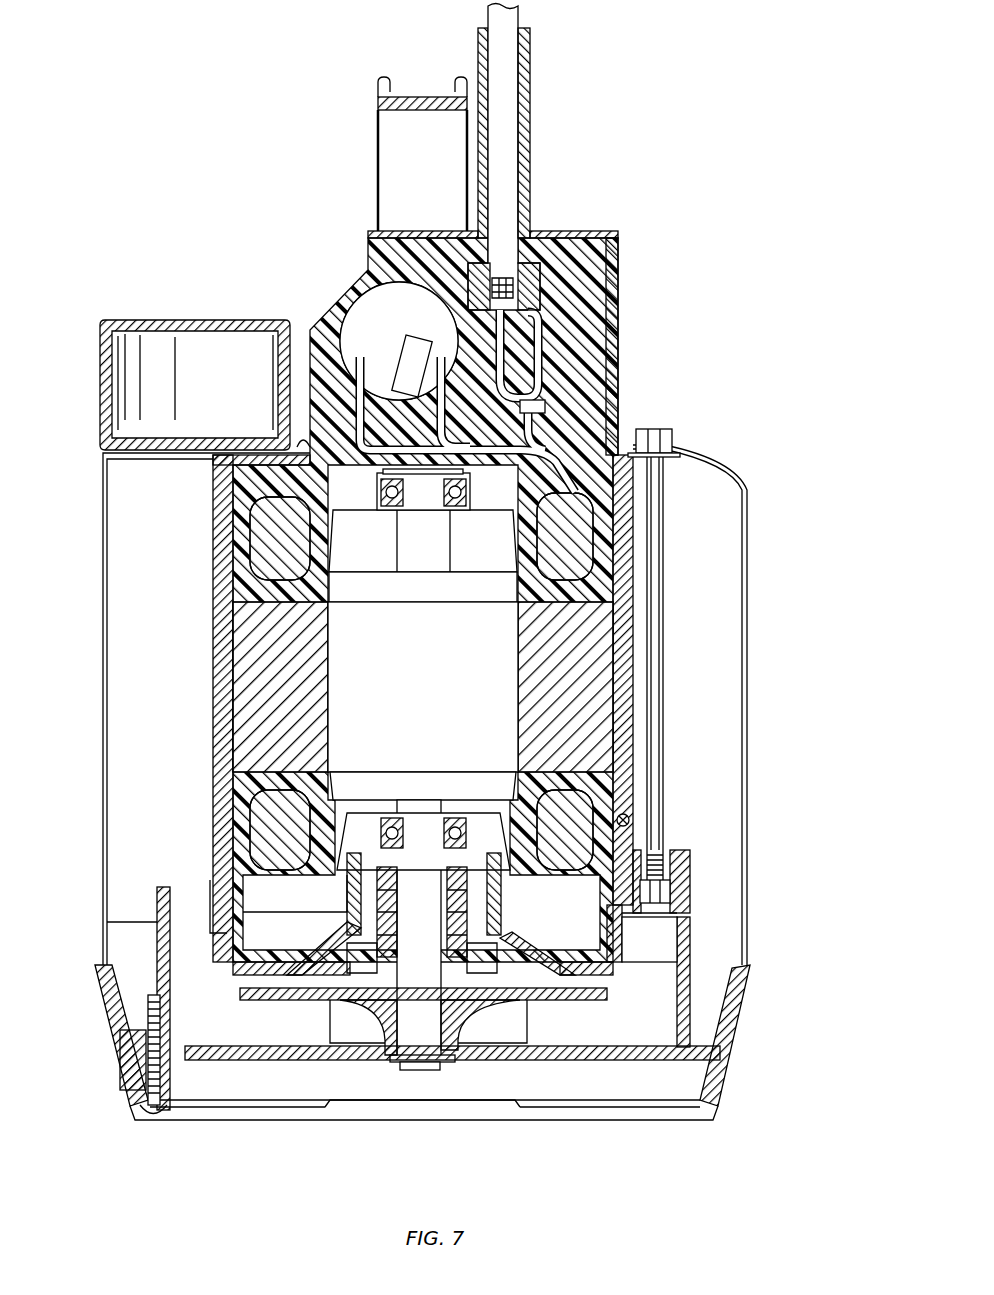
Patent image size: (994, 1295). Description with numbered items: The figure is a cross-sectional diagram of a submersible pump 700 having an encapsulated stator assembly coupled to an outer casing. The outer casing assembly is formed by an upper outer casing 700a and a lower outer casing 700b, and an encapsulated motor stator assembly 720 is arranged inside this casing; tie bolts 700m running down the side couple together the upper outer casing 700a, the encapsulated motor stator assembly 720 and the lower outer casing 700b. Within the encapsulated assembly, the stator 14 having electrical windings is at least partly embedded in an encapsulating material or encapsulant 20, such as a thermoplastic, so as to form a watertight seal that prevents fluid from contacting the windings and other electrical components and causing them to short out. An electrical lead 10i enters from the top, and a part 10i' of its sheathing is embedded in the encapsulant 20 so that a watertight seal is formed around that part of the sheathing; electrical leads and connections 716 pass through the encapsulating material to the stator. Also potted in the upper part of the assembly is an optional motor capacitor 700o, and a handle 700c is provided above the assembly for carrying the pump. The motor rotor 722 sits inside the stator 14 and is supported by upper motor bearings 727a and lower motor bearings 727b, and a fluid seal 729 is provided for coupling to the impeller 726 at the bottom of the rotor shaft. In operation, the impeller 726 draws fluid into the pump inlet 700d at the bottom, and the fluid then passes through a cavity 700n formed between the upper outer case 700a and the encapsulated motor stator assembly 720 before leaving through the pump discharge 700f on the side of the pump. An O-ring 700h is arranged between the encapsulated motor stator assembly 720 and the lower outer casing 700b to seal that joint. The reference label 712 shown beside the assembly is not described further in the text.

The submersible pump 700 is at (432, 602).
The handle 700c is at (412, 92).
The electrical lead 10i is at (563, 157).
The part of the sheathing of the electrical lead 10i' is at (547, 133).
The encapsulating material 20 is at (600, 232).
The encapsulated assembly 712 is at (632, 267).
The encapsulated motor stator assembly 720 is at (618, 308).
The electrical leads and connections 716 is at (547, 353).
The upper outer casing 700a is at (101, 548).
The pump discharge 700f is at (200, 308).
The optional motor capacitor 700o is at (375, 327).
The upper motor bearings 727a is at (387, 487).
The cavity 700n is at (148, 637).
The lower motor bearings 727b is at (372, 830).
The motor rotor 722 is at (400, 737).
The tie bolts 700m is at (653, 612).
The stator 14 is at (600, 672).
The O-ring 700h is at (628, 822).
The lower outer casing 700b is at (750, 997).
The pump inlet 700d is at (393, 1107).
The fluid seal 729 is at (503, 940).
The impeller 726 is at (595, 1027).